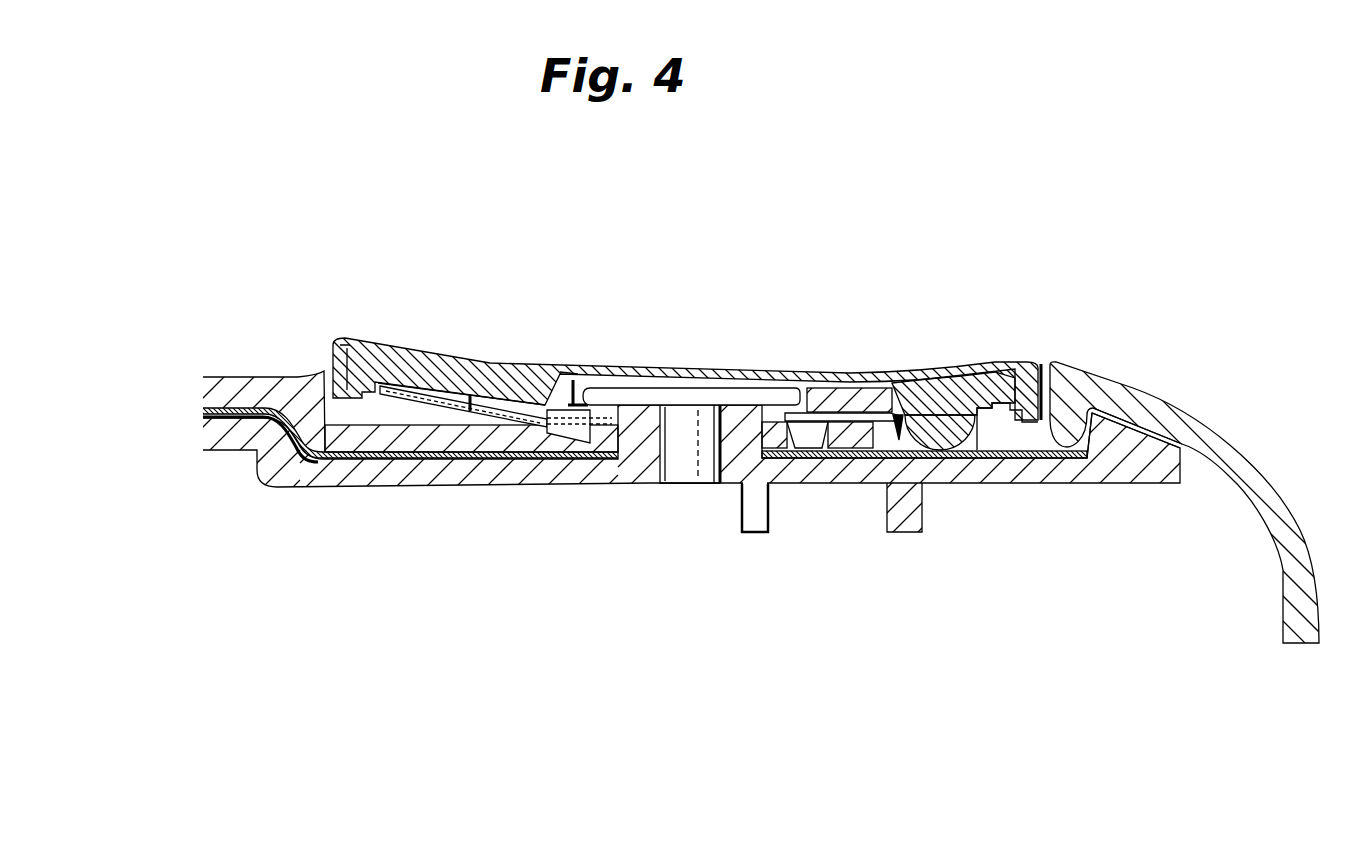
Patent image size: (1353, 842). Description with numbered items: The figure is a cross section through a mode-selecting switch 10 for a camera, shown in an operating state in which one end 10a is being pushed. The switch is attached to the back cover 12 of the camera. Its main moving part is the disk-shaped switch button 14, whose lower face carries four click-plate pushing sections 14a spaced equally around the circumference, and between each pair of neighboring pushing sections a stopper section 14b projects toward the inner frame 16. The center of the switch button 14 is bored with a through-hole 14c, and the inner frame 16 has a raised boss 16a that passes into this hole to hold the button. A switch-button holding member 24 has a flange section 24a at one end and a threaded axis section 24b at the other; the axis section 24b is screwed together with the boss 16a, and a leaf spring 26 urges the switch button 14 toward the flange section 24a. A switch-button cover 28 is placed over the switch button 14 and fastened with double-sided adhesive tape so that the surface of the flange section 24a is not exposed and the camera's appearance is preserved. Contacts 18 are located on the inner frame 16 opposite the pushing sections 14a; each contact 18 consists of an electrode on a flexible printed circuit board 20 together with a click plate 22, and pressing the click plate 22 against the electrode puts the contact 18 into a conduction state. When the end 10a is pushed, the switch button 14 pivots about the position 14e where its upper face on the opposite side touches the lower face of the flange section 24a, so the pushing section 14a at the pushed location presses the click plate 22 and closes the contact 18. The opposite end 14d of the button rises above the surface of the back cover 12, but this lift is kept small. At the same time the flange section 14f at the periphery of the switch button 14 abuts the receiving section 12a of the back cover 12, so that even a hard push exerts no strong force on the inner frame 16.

The mode-selecting switch 10 is at (757, 338).
The end of the mode-selecting switch 10a is at (1030, 363).
The back cover 12 is at (210, 380).
The receiving section 12a is at (1062, 470).
The switch button 14 is at (527, 372).
The click-plate pushing section 14a is at (437, 412).
The stopper section 14b is at (580, 466).
The through-hole 14c is at (598, 400).
The end of the switch button 14d is at (335, 350).
The pivot position 14e is at (577, 374).
The flange section of the switch button 14f is at (1090, 386).
The inner frame 16 is at (1148, 462).
The boss 16a is at (765, 385).
The contact 18 is at (893, 395).
The flexible printed circuit board 20 is at (380, 488).
The click plate 22 is at (880, 485).
The switch-button holding member 24 is at (702, 385).
The flange section 24a is at (648, 386).
The axis section 24b is at (688, 486).
The leaf spring 26 is at (950, 382).
The switch-button cover 28 is at (440, 374).